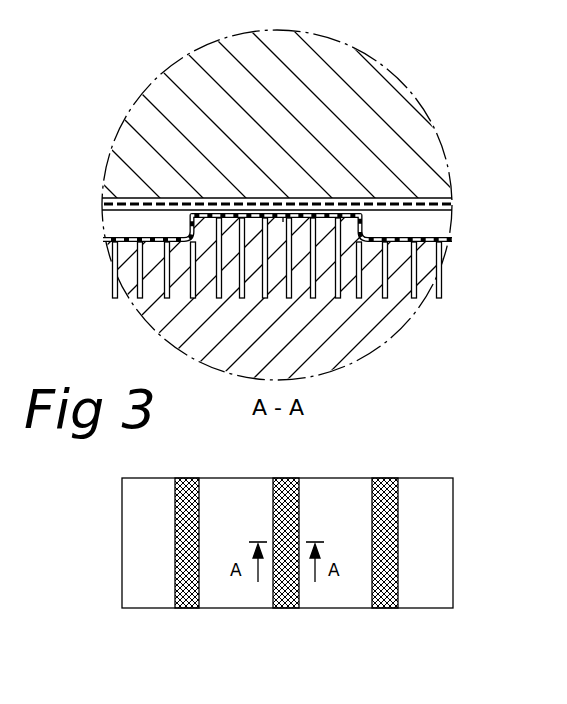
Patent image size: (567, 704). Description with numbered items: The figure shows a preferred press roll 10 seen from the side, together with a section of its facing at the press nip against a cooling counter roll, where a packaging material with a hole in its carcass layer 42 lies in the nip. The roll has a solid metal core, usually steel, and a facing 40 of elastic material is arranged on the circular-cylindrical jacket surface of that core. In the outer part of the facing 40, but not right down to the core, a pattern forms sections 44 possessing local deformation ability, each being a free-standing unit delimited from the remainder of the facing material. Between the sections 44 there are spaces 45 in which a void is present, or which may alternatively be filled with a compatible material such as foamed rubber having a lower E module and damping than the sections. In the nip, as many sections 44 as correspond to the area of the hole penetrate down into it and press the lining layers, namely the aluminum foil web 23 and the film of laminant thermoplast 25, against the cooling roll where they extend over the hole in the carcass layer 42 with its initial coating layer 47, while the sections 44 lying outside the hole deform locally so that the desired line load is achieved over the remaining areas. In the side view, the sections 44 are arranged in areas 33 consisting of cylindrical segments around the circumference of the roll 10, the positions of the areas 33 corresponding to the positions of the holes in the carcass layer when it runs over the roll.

The press roll 10 is at (437, 595).
The aluminum foil web 23 is at (452, 198).
The laminant thermoplast film 25 is at (450, 208).
The areas 33 is at (293, 602).
The facing 40 is at (383, 328).
The carcass layer 42 is at (450, 222).
The sections possessing local deformation ability 44 is at (325, 218).
The spaces 45 is at (283, 222).
The initial coating layer 47 is at (450, 238).